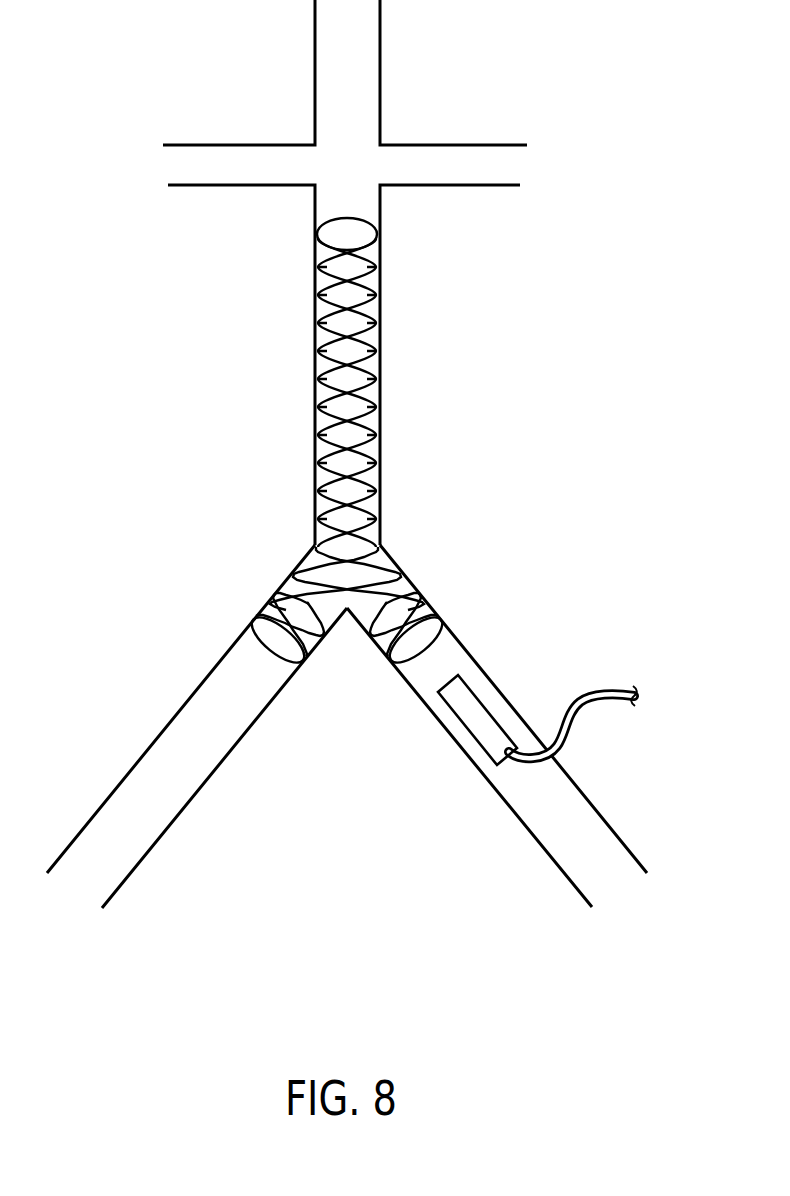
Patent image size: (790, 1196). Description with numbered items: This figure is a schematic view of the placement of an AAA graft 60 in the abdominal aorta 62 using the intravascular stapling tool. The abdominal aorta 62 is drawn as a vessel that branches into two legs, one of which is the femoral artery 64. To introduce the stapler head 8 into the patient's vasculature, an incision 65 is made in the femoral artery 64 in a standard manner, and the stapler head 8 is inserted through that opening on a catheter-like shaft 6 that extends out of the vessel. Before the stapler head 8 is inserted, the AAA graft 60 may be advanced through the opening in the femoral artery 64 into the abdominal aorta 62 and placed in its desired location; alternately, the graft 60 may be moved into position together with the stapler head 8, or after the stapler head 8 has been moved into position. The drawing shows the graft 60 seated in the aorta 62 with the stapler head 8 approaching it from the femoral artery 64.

The abdominal aorta 62 is at (380, 206).
The AAA graft 60 is at (395, 361).
The femoral artery 64 is at (597, 812).
The catheter 6 is at (577, 704).
The incision 65 is at (549, 736).
The stapler head 8 is at (455, 717).